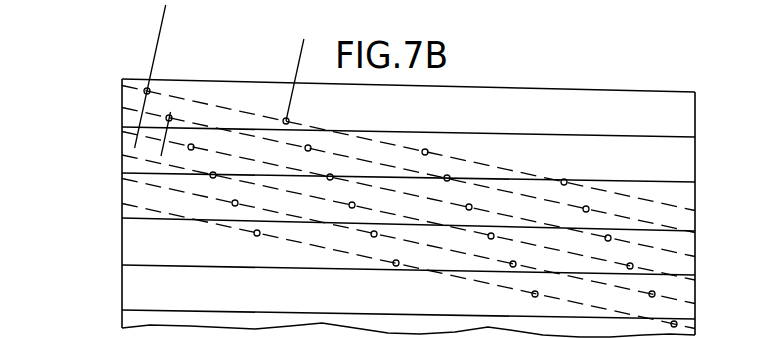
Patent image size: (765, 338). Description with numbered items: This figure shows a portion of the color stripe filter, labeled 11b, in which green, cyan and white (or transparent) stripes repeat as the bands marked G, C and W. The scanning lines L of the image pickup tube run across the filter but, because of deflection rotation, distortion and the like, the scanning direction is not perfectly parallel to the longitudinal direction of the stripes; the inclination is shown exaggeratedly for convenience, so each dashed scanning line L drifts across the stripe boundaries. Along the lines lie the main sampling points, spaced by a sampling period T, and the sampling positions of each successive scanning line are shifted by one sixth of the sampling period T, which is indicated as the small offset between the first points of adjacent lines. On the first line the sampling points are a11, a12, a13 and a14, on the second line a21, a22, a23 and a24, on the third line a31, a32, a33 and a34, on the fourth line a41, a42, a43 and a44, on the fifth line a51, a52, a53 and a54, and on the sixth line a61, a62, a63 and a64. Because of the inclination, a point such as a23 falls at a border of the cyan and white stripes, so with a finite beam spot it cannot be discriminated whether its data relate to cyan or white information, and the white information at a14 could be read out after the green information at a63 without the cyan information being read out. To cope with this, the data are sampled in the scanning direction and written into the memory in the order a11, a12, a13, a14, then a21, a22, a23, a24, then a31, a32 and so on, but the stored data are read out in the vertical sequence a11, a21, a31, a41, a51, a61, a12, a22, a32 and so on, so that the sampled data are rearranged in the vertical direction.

The shadow mask section 11b is at (512, 66).
The scanning lines L is at (694, 205).
The sampling period T is at (302, 45).
The sampling point a11 is at (149, 88).
The sampling point a12 is at (292, 113).
The sampling point a13 is at (428, 151).
The sampling point a14 is at (564, 179).
The sampling point a21 is at (172, 116).
The sampling point a22 is at (315, 144).
The sampling point a23 is at (445, 175).
The sampling point a24 is at (587, 203).
The sampling point a31 is at (198, 143).
The sampling point a32 is at (330, 171).
The sampling point a33 is at (469, 201).
The sampling point a34 is at (605, 239).
The sampling point a41 is at (213, 169).
The sampling point a42 is at (352, 199).
The sampling point a43 is at (488, 237).
The sampling point a44 is at (630, 259).
The sampling point a51 is at (238, 201).
The sampling point a52 is at (371, 236).
The sampling point a53 is at (519, 256).
The sampling point a54 is at (649, 295).
The sampling point a61 is at (257, 236).
The sampling point a62 is at (399, 261).
The sampling point a63 is at (538, 292).
The sampling point a64 is at (673, 321).